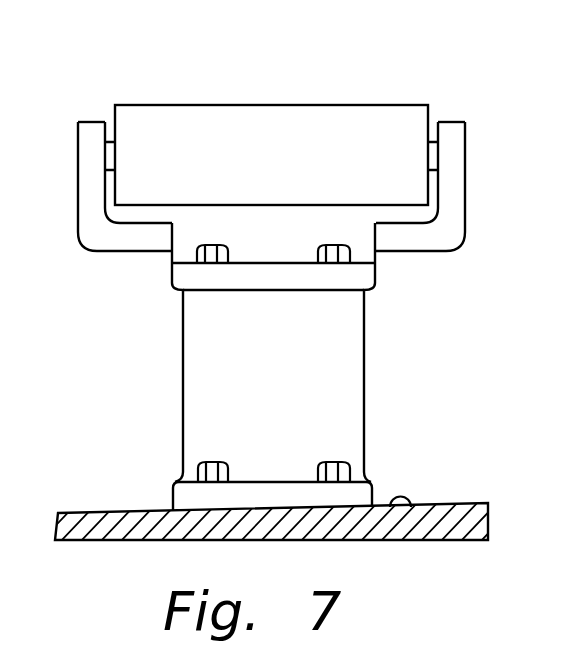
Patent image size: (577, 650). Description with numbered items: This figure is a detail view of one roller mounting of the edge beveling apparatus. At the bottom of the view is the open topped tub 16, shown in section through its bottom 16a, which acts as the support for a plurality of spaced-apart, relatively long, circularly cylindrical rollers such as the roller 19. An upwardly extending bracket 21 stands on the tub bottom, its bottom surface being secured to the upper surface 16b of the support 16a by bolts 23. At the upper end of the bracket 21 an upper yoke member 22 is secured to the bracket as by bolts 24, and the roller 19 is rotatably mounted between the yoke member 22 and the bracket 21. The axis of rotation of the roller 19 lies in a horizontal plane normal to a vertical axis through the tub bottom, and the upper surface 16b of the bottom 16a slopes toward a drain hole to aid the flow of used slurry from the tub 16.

The open topped tub 16 is at (496, 521).
The bottom of tub 16a is at (455, 527).
The upper surface of support 16b is at (405, 498).
The roller 19 is at (304, 163).
The bracket 21 is at (290, 380).
The upper yoke member 22 is at (453, 192).
The bolt 23 is at (318, 475).
The bolt 24 is at (323, 253).